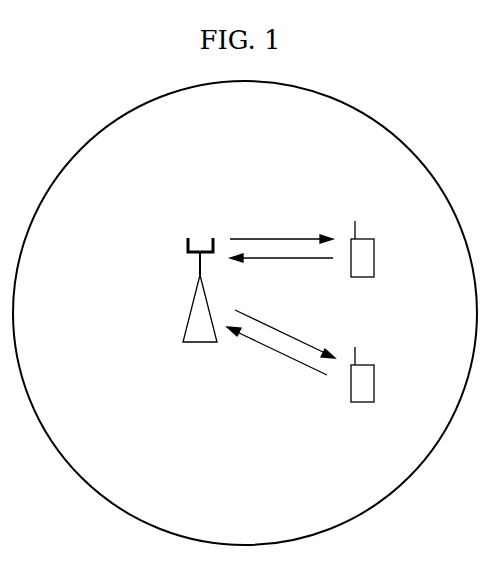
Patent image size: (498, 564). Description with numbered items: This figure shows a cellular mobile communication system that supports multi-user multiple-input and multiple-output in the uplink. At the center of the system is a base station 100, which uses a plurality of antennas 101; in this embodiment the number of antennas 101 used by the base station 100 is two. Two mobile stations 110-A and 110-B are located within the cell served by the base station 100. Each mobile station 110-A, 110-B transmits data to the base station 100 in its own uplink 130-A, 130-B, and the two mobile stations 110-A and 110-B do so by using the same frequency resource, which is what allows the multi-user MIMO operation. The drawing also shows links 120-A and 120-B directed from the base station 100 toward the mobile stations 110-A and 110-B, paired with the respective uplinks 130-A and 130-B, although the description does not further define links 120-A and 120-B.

The base station 100 is at (192, 306).
The antennas 101 is at (187, 240).
The mobile station 110-A is at (365, 238).
The mobile station 110-B is at (365, 363).
The downlink to first terminal 120-A is at (282, 237).
The uplink 130-A is at (282, 262).
The downlink to second terminal 120-B is at (302, 342).
The uplink 130-B is at (292, 360).